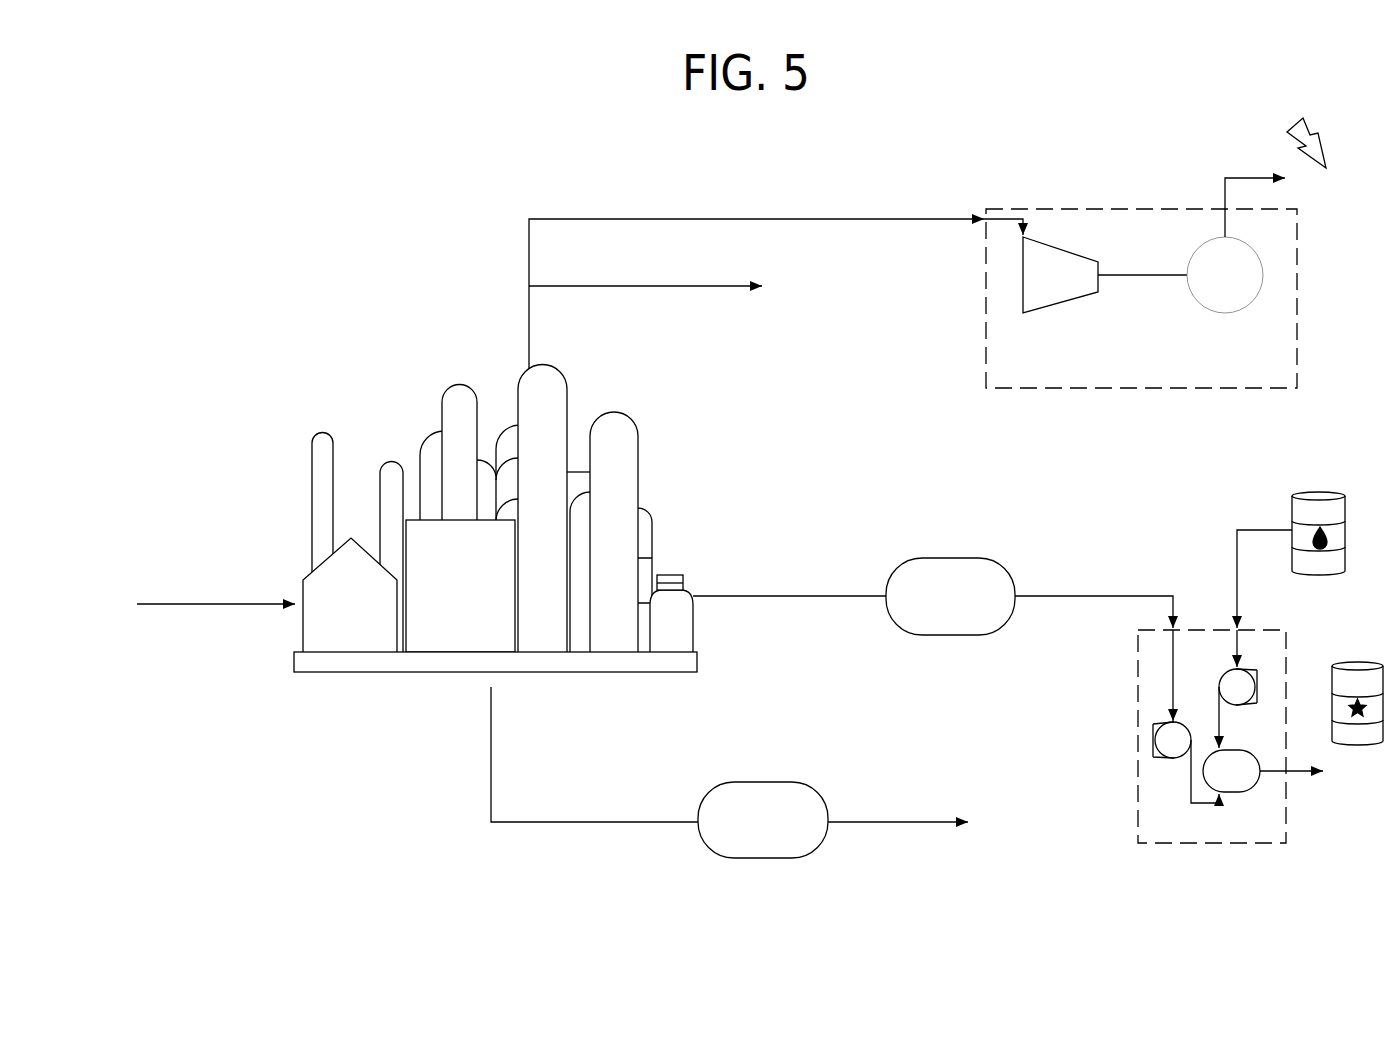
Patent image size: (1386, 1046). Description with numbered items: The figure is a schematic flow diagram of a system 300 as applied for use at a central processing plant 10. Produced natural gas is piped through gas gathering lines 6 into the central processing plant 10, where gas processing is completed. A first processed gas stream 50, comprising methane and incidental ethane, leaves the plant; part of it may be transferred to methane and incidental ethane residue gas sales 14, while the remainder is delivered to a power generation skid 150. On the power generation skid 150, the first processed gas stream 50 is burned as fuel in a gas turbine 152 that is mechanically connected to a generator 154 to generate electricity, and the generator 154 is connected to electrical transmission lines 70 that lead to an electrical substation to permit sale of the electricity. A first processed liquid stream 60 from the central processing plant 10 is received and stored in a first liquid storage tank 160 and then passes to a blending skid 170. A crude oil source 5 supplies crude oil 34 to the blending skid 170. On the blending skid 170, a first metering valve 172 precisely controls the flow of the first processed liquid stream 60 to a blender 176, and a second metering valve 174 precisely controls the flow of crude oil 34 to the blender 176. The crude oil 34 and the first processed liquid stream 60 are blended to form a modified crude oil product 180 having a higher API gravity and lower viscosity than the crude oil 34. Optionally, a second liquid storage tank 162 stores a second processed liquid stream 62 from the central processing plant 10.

The integrated refinery and power generation system 300 is at (243, 181).
The gas gathering lines 6 is at (170, 603).
The central processing plant 10 is at (386, 672).
The methane and incidental ethane (residue gas) sales 14 is at (664, 295).
The first processed gas stream 50 is at (719, 218).
The first processed liquid stream 60 is at (786, 596).
The second processed liquid stream 62 is at (591, 821).
The electrical transmission lines 70 is at (1275, 177).
The power generation skid 150 is at (1160, 209).
The gas turbine 152 is at (1058, 313).
The generator 154 is at (1235, 313).
The first liquid storage tank 160 is at (929, 610).
The second liquid storage tank 162 is at (742, 834).
The crude oil source 5 is at (1318, 518).
The crude oil 34 is at (1236, 558).
The blending skid 170 is at (1249, 843).
The first metering valve 172 is at (1242, 699).
The second metering valve 174 is at (1173, 754).
The blender 176 is at (1237, 781).
The modified crude oil product 180 is at (1357, 720).